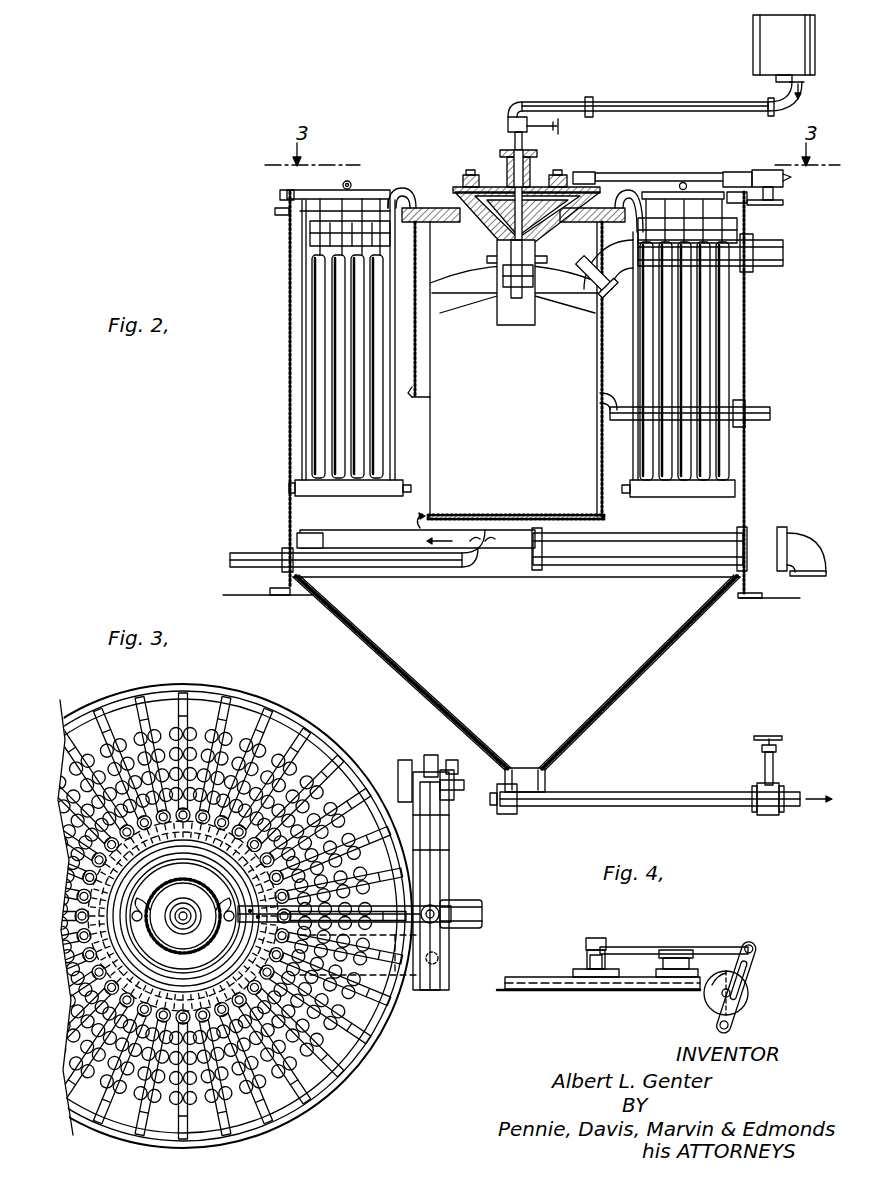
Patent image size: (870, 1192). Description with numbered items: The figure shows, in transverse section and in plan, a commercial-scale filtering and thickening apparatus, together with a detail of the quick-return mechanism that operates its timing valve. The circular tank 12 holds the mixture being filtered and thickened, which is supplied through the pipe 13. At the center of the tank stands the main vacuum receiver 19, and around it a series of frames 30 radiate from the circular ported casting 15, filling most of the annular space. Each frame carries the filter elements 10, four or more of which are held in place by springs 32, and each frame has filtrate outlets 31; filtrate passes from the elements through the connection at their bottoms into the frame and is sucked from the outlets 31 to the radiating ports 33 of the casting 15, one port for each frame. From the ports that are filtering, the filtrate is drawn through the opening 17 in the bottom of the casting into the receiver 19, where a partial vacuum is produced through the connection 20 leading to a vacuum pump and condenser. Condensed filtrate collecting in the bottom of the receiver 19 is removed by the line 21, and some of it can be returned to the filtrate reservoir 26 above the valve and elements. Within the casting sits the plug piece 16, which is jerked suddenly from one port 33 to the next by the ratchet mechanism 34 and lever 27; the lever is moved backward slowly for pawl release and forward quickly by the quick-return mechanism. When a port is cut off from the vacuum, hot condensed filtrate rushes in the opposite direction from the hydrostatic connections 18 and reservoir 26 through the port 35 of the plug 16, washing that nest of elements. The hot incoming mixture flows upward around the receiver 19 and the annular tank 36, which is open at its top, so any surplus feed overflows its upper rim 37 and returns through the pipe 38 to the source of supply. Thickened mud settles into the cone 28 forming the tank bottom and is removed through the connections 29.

In FIG. 2, the filter elements 10 is at (332, 407).
In FIG. 3, the filter elements 10 is at (340, 1042).
In FIG. 2, the tank 12 is at (288, 498).
In FIG. 3, the tank 12 is at (320, 738).
In FIG. 2, the pipe 13 is at (250, 552).
In FIG. 2, the casting 15 is at (468, 218).
In FIG. 2, the plug piece 16 is at (466, 180).
In FIG. 2, the opening 17 is at (534, 243).
In FIG. 2, the hydrostatic connections 18 is at (649, 105).
In FIG. 2, the vacuum receiver 19 is at (432, 359).
In FIG. 2, the connection 20 is at (758, 258).
In FIG. 3, the connection 20 is at (400, 932).
In FIG. 2, the line 21 is at (616, 562).
In FIG. 2, the filtrate reservoir 26 is at (768, 35).
In FIG. 2, the lever 27 is at (643, 178).
In FIG. 3, the lever 27 is at (340, 916).
In FIG. 2, the cone 28 is at (620, 672).
In FIG. 2, the connections 29 is at (628, 795).
In FIG. 2, the frames 30 is at (403, 452).
In FIG. 3, the frames 30 is at (272, 698).
In FIG. 2, the filtrate outlets 31 is at (400, 190).
In FIG. 2, the springs 32 is at (312, 230).
In FIG. 2, the ports 33 is at (433, 206).
In FIG. 2, the ratchet mechanism 34 is at (471, 175).
In FIG. 3, the ratchet mechanism 34 is at (132, 912).
In FIG. 2, the port 35 is at (484, 200).
In FIG. 2, the annular tank 36 is at (420, 381).
In FIG. 2, the upper rim 37 is at (608, 232).
In FIG. 2, the pipe 38 is at (760, 408).